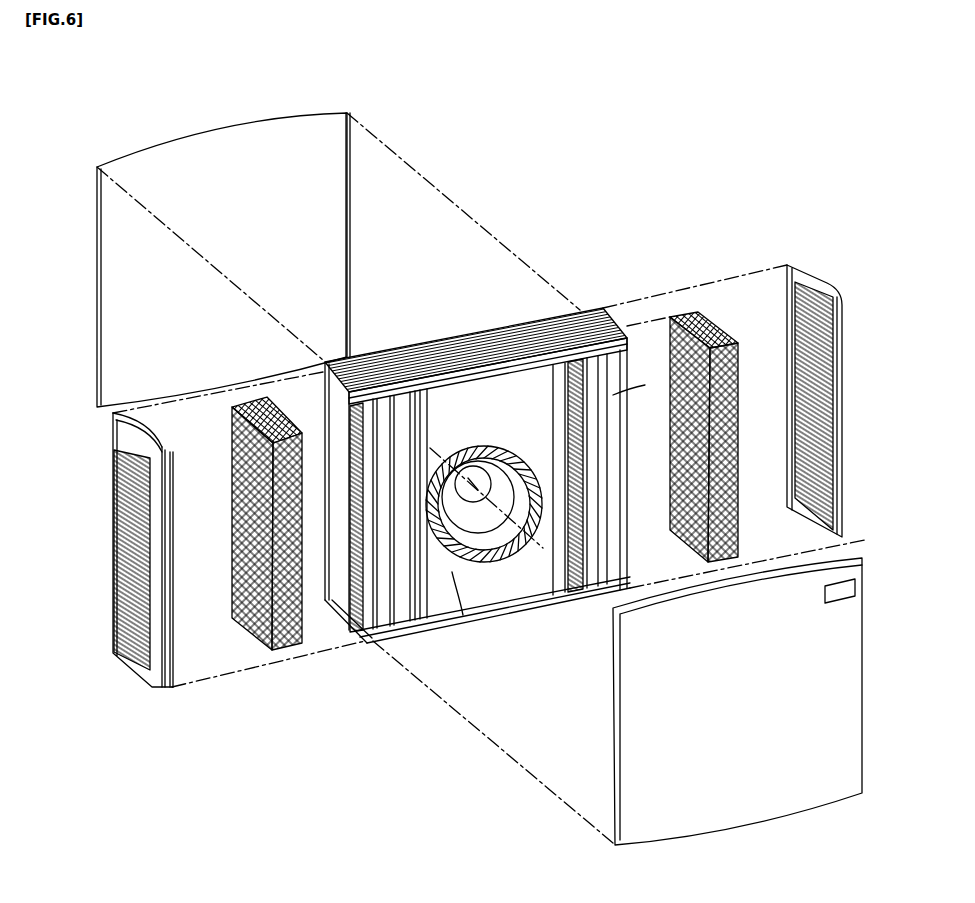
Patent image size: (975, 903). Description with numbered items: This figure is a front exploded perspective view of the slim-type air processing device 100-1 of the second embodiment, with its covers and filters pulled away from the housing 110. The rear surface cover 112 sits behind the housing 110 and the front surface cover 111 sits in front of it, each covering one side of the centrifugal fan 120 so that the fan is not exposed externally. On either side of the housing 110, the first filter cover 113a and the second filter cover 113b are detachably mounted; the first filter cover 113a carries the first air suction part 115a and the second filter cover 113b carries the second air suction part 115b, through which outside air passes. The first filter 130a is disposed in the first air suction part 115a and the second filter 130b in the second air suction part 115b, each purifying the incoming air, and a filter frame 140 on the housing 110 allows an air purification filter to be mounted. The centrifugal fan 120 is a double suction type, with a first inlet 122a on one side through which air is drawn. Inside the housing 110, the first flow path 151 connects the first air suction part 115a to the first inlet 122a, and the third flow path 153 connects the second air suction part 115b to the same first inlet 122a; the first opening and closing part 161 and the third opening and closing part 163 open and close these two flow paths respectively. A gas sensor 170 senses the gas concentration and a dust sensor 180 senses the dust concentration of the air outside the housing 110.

The slim-type air processing device 100-1 is at (716, 93).
The housing 110 is at (501, 418).
The front surface cover 111 is at (747, 806).
The rear surface cover 112 is at (237, 150).
The first filter cover 113a is at (100, 583).
The second filter cover 113b is at (849, 399).
The first air suction part 115a is at (113, 570).
The second air suction part 115b is at (833, 406).
The centrifugal fan 120 is at (512, 564).
The first inlet 122a is at (530, 618).
The first filter 130a is at (300, 645).
The second filter 130b is at (700, 312).
The filter frame 140 is at (360, 641).
The first flow path 151 is at (452, 572).
The third flow path 153 is at (645, 383).
The first opening and closing part 161 is at (428, 427).
The third opening and closing part 163 is at (553, 392).
The gas sensor 170 is at (373, 350).
The dust sensor 180 is at (604, 308).